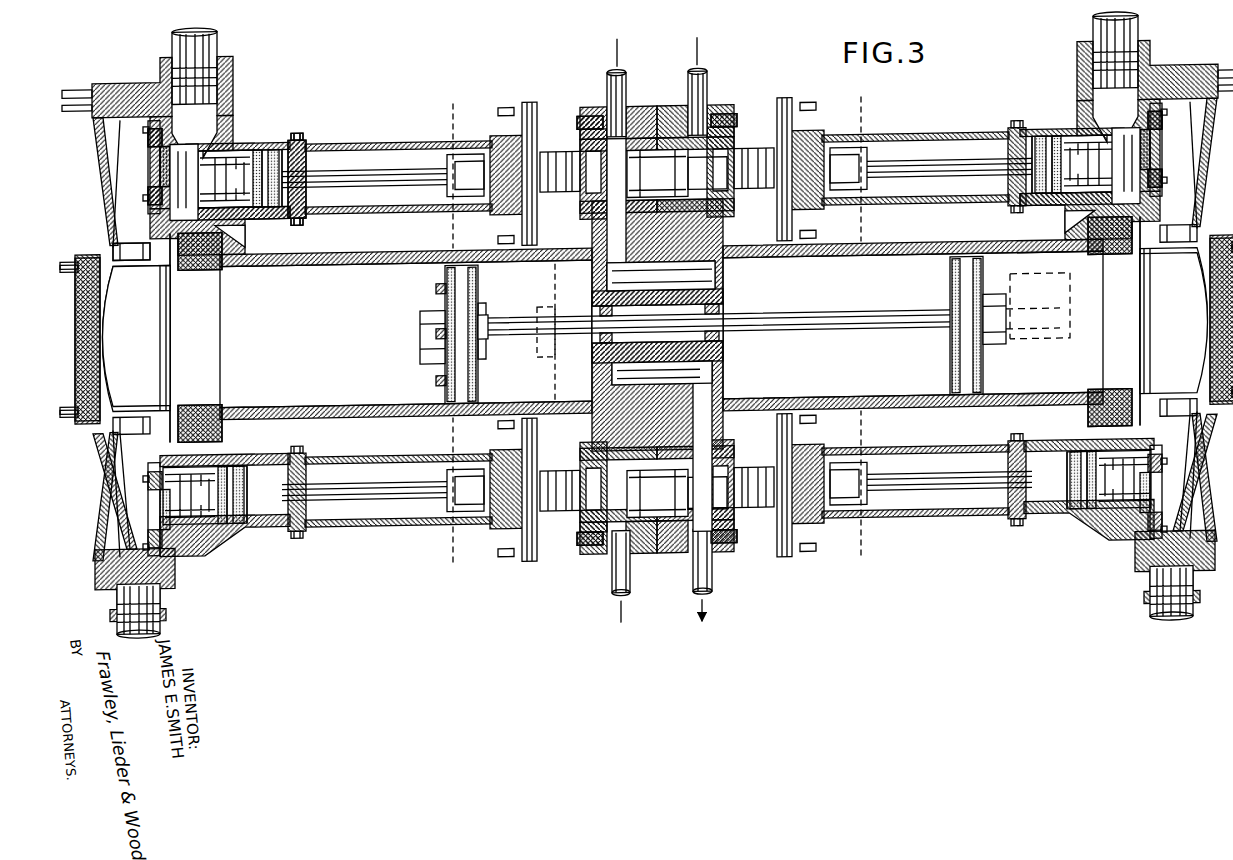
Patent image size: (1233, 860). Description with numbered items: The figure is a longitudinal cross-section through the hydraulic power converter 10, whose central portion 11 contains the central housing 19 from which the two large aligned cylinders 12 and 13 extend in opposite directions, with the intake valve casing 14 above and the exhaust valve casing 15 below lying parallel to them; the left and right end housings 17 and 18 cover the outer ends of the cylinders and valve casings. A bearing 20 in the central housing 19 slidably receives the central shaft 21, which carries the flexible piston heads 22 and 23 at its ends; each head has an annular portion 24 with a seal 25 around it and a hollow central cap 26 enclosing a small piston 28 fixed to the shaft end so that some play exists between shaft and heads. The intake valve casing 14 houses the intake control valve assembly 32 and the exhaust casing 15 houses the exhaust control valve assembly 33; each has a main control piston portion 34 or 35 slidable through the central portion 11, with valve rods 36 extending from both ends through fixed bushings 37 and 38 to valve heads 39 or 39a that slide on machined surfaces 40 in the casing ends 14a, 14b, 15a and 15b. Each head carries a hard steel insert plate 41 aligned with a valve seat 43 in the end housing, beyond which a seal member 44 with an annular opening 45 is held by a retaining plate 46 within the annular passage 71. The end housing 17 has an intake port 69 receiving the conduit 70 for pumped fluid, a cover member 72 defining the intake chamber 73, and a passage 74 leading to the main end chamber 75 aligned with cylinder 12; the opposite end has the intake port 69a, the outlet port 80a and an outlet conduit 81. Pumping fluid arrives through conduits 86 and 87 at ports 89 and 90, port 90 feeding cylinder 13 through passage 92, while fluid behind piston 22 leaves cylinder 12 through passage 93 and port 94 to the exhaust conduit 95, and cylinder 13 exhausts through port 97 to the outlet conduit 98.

The hydraulic power converter 10 is at (505, 78).
The central portion 11 is at (655, 108).
The left cylinder 12 is at (333, 321).
The right cylinder 13 is at (876, 292).
The intake valve casing 14 is at (480, 128).
The left intake valve casing end 14a is at (392, 139).
The right intake valve casing end 14b is at (930, 139).
The exhaust valve casing 15 is at (562, 545).
The left exhaust valve casing end 15a is at (340, 520).
The right exhaust valve casing end 15b is at (930, 519).
The left end housing 17 is at (242, 255).
The right end housing 18 is at (1068, 408).
The central housing 19 is at (590, 294).
The bearing 20 is at (720, 296).
The central shaft 21 is at (776, 332).
The left flexible piston head 22 is at (436, 372).
The right flexible piston head 23 is at (985, 296).
The annular portion 24 is at (483, 370).
The seal 25 is at (470, 295).
The hollow central cap 26 is at (420, 324).
The small piston 28 is at (490, 315).
The intake control valve assembly 32 is at (452, 152).
The exhaust control valve assembly 33 is at (445, 515).
The intake main control piston portion 34 is at (585, 150).
The exhaust main control piston portion 35 is at (750, 530).
The valve rod 36 is at (378, 185).
The fixed bushing 37 is at (495, 200).
The fixed bushing 38 is at (300, 134).
The intake valve head 39 is at (248, 150).
The exhaust valve head 39a is at (225, 525).
The machined surface 40 is at (298, 128).
The steel insert plate 41 is at (205, 173).
The valve seat 43 is at (150, 142).
The seal member 44 is at (152, 196).
The annular opening 45 is at (160, 180).
The retaining plate 46 is at (1150, 220).
The intake port 69 is at (205, 128).
The right intake port 69a is at (1135, 90).
The intake conduit 70 is at (215, 44).
The annular passage 71 is at (150, 152).
The cover member 72 is at (100, 140).
The intake chamber 73 is at (112, 192).
The passage 74 is at (135, 252).
The main end chamber 75 is at (137, 336).
The right outlet port 80a is at (1140, 570).
The outlet conduit 81 is at (160, 612).
The pumping fluid conduit 86 is at (707, 82).
The pumping fluid conduit 87 is at (626, 80).
The pumping fluid inlet port 89 is at (735, 120).
The pumping fluid inlet port 90 is at (588, 115).
The passage 92 is at (715, 285).
The exhaust passage 93 is at (712, 378).
The outlet port 94 is at (717, 544).
The exhaust conduit 95 is at (712, 585).
The outlet port 97 is at (600, 544).
The outlet conduit 98 is at (630, 585).